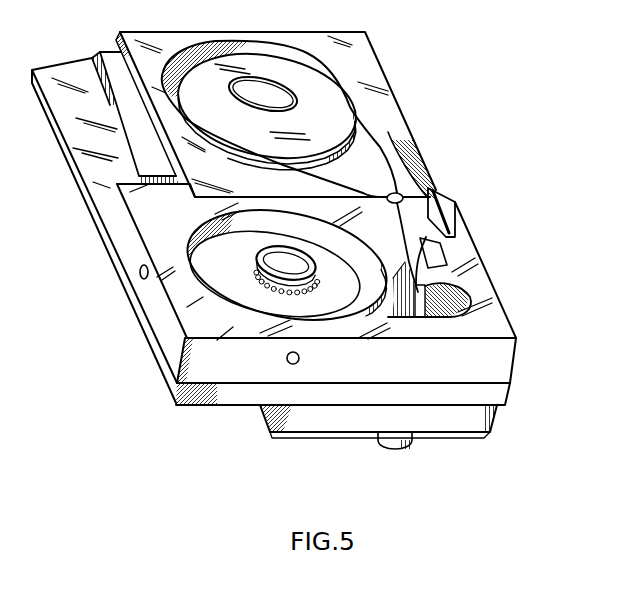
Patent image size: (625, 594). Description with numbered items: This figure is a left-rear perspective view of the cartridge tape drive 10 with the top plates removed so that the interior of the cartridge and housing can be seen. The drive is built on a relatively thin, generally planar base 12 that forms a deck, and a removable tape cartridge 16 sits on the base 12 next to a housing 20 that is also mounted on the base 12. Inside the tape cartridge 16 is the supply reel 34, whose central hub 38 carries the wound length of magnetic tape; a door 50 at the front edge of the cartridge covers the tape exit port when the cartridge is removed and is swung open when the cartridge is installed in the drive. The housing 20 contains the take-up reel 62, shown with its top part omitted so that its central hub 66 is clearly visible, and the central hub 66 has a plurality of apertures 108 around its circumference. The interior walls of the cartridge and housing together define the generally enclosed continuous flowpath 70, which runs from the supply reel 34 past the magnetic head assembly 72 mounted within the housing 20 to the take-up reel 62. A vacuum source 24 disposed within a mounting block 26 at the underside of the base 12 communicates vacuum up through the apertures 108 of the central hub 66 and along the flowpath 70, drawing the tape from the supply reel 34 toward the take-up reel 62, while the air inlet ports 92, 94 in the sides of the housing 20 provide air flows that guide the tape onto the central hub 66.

The cartridge tape drive 10 is at (220, 447).
The base 12 is at (100, 222).
The tape cartridge 16 is at (391, 71).
The housing 20 is at (506, 352).
The vacuum source 24 is at (410, 443).
The mounting block 26 is at (497, 415).
The supply reel 34 is at (243, 63).
The central hub 38 is at (287, 101).
The door 50 is at (447, 200).
The take-up reel 62 is at (192, 238).
The central hub 66 is at (316, 262).
The continuous flowpath 70 is at (377, 160).
The magnetic head assembly 72 is at (447, 260).
The air inlet port 92 is at (296, 365).
The air inlet port 94 is at (143, 280).
The apertures 108 is at (303, 294).